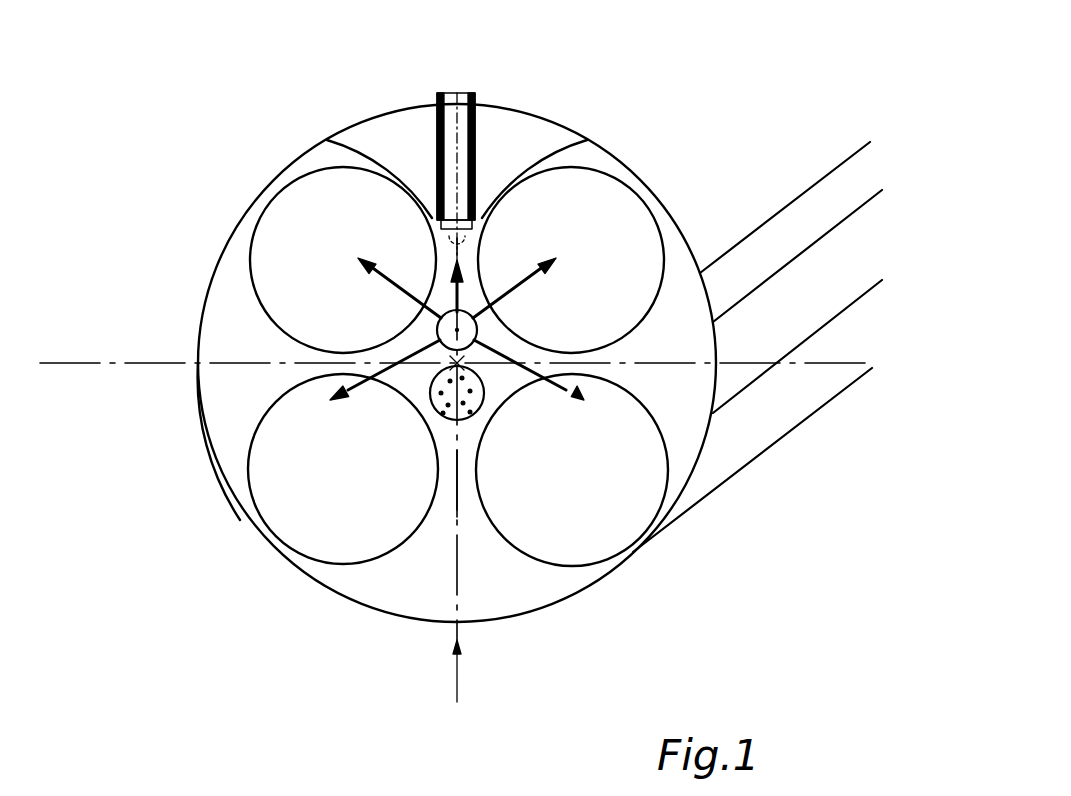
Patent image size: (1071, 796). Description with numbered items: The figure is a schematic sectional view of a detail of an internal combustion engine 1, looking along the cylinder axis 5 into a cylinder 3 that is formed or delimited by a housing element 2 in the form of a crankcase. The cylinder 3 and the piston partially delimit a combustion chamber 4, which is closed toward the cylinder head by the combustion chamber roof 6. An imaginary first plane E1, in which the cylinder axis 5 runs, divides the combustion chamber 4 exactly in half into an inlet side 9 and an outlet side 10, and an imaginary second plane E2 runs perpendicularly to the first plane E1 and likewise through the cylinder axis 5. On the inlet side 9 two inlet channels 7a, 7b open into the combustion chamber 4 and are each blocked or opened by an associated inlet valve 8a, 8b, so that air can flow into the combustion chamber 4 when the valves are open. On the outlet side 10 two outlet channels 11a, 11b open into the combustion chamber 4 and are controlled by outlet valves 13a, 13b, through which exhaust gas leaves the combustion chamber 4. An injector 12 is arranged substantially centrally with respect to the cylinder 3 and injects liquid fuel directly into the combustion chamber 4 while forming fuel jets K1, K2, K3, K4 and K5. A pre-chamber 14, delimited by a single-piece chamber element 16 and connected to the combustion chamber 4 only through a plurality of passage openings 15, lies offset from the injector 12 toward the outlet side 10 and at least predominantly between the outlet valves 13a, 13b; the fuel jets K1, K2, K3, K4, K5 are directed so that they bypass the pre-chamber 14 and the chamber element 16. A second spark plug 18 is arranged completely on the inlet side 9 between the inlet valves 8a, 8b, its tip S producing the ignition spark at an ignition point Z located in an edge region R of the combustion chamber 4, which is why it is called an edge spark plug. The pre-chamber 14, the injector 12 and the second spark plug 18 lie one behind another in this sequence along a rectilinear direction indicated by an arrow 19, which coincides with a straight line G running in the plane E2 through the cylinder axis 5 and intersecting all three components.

The internal combustion engine 1 is at (690, 160).
The housing element 2 is at (822, 292).
The cylinder 3 is at (655, 535).
The combustion chamber 4 is at (513, 587).
The cylinder axis 5 is at (478, 408).
The combustion chamber roof 6 is at (220, 450).
The inlet channel 7a is at (255, 217).
The inlet channel 7b is at (663, 215).
The inlet valve 8a is at (278, 253).
The inlet valve 8b is at (600, 192).
The inlet side 9 is at (520, 105).
The outlet side 10 is at (380, 593).
The outlet channel 11a is at (310, 561).
The outlet channel 11b is at (633, 552).
The injector 12 is at (437, 329).
The outlet valve 13a is at (278, 503).
The outlet valve 13b is at (640, 478).
The pre-chamber 14 is at (440, 411).
The passage openings 15 is at (462, 421).
The chamber element 16 is at (430, 398).
The second spark plug 18 is at (437, 96).
The arrow 19 is at (457, 694).
The fuel jet K1 is at (403, 292).
The fuel jet K2 is at (538, 290).
The fuel jet K3 is at (357, 394).
The fuel jet K4 is at (532, 403).
The fuel jet K5 is at (450, 296).
The ignition point Z is at (440, 248).
The tip S is at (478, 248).
The edge region R is at (432, 220).
The first plane E1 is at (870, 363).
The second plane E2 is at (457, 580).
The straight line G is at (441, 555).